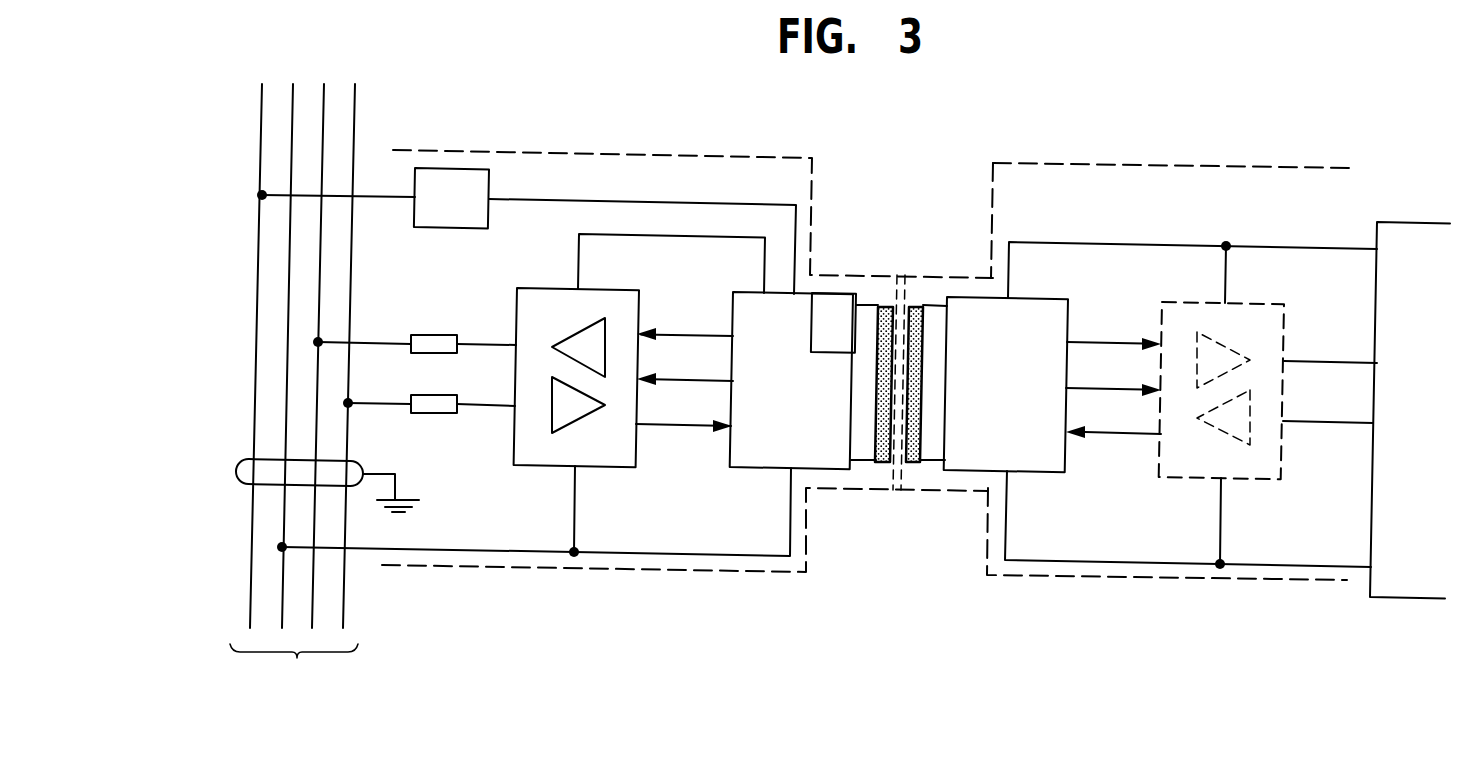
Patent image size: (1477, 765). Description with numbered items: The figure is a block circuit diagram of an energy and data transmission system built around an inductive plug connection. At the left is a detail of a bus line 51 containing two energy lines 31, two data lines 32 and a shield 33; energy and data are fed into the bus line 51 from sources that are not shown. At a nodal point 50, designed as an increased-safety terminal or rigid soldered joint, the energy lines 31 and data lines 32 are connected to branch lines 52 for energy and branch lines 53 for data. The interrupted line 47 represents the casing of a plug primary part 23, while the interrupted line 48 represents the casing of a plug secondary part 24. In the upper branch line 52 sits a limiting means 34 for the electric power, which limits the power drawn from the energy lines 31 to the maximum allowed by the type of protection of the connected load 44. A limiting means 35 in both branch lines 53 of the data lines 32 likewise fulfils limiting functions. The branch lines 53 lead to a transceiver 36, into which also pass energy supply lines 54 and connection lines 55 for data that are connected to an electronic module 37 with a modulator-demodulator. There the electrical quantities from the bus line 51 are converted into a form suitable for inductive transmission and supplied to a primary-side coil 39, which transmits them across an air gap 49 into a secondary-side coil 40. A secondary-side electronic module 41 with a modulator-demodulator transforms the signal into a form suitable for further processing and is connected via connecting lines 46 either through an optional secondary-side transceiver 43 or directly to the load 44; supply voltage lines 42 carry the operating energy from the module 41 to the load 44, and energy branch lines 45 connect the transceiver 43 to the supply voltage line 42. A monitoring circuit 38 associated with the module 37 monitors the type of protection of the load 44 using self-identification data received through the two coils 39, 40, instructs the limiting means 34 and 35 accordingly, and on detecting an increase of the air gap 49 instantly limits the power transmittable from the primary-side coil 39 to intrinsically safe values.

The plug primary part 23 is at (703, 150).
The plug secondary part 24 is at (1185, 158).
The energy lines 31 is at (282, 588).
The data lines 32 is at (312, 588).
The shield 33 is at (360, 458).
The limiting means for the electric power 34 is at (467, 212).
The limiting means 35 is at (431, 355).
The transceiver 36 is at (621, 457).
The electronic module with modulator-demodulator 37 is at (793, 450).
The monitoring circuit 38 is at (846, 335).
The primary-side coil 39 is at (887, 305).
The secondary-side coil 40 is at (918, 305).
The secondary-side electronic module with modulator-demodulator 41 is at (1025, 402).
The supply voltage lines 42 is at (1280, 247).
The secondary-side transceiver 43 is at (1206, 467).
The load 44 is at (1454, 413).
The energy branch lines 45 is at (1225, 280).
The connecting lines 46 is at (1108, 342).
The interrupted line 47 is at (695, 573).
The interrupted line 48 is at (1100, 581).
The air gap 49 is at (896, 492).
The nodal point 50 is at (236, 332).
The bus line 51 is at (301, 396).
The branch lines for the energy lines 52 is at (676, 201).
The branch lines for the data lines 53 is at (497, 406).
The energy supply lines 54 is at (676, 236).
The connection lines for data 55 is at (695, 334).